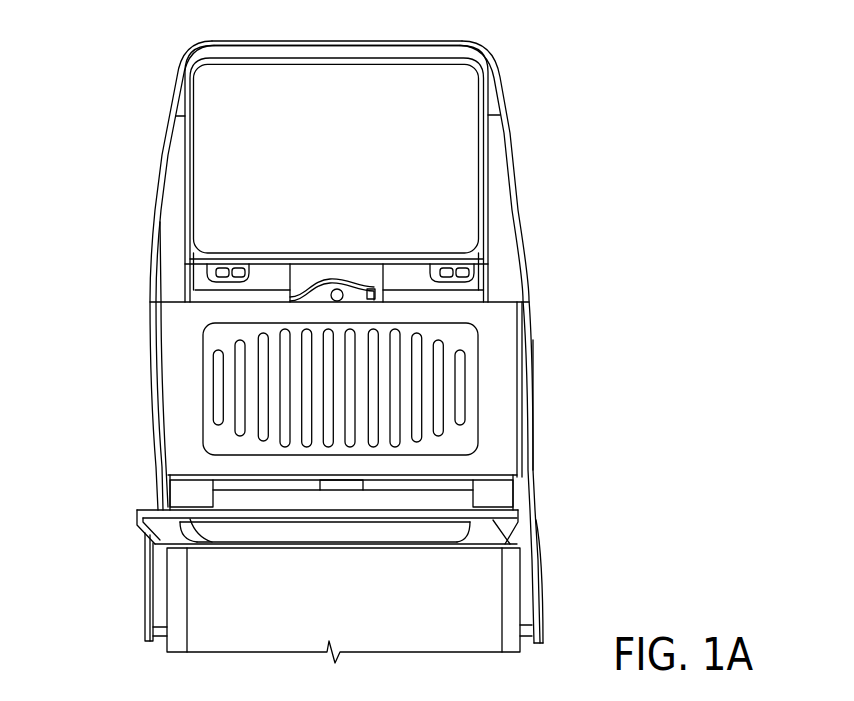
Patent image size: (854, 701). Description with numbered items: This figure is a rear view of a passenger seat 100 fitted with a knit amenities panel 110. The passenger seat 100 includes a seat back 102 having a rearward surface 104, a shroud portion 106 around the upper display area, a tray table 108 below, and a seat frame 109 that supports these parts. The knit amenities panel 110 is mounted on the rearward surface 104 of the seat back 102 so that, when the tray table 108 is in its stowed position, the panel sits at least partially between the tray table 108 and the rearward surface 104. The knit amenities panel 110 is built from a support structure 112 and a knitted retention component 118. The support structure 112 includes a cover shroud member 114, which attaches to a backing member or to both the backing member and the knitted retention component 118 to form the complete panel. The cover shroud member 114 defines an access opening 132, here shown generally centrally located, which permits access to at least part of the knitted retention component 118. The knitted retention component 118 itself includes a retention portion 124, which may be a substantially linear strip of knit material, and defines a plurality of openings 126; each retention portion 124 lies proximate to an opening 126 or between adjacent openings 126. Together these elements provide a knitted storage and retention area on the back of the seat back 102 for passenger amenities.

The passenger seat 100 is at (119, 54).
The seat back 102 is at (498, 172).
The rearward surface 104 is at (478, 596).
The shroud portion 106 is at (175, 202).
The tray table 108 is at (158, 534).
The seat frame 109 is at (148, 633).
The knit amenities panel 110 is at (547, 391).
The support structure 112 is at (528, 314).
The cover shroud member 114 is at (503, 450).
The knitted retention component 118 is at (216, 340).
The retention portion 124 is at (247, 407).
The opening 126 is at (218, 380).
The access opening 132 is at (228, 323).